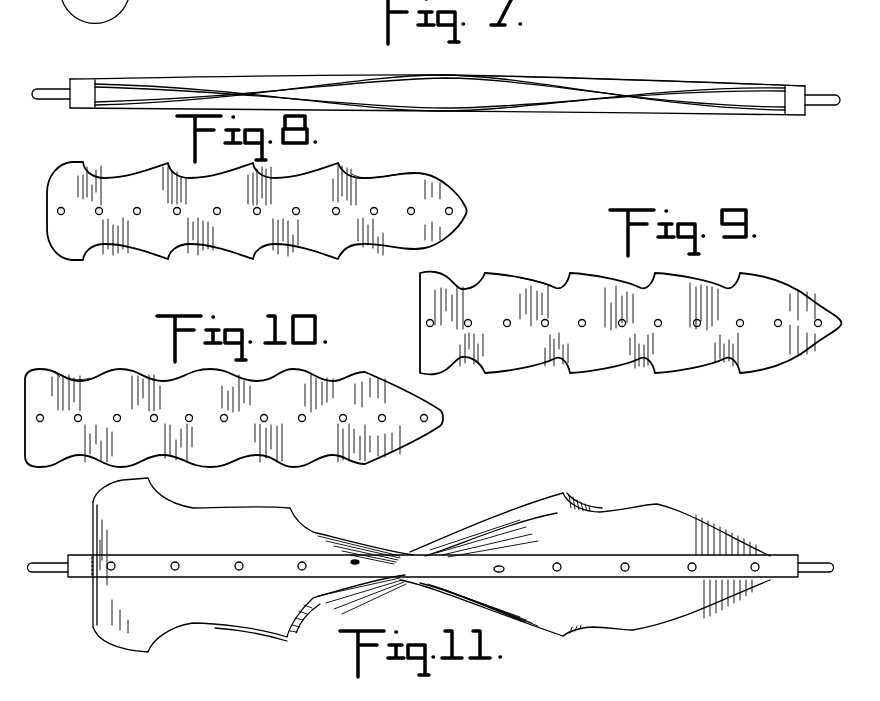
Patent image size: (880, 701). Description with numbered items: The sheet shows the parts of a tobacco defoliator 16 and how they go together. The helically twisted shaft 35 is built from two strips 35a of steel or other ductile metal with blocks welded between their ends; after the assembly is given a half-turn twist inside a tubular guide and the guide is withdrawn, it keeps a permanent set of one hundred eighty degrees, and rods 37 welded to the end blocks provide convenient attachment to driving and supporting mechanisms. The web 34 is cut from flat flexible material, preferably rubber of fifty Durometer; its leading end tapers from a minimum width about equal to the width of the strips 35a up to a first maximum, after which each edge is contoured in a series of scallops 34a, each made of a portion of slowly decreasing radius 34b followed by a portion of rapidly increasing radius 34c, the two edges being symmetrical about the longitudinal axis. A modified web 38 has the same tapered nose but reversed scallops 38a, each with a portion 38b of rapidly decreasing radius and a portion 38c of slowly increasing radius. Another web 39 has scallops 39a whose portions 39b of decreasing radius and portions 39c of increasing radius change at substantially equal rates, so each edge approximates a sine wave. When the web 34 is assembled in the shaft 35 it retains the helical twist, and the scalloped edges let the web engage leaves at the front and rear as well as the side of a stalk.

In FIG. 11, the defoliator 16 is at (671, 489).
In FIG. 8, the web 34 is at (436, 192).
In FIG. 11, the web 34 is at (701, 527).
In FIG. 8, the scallops 34a is at (393, 128).
In FIG. 8, the portion of slowly decreasing radius 34b is at (369, 177).
In FIG. 8, the portion of rapidly increasing radius 34c is at (340, 162).
In FIG. 7, the helically twisted shaft 35 is at (653, 55).
In FIG. 11, the helically twisted shaft 35 is at (739, 563).
In FIG. 7, the strips 35a is at (736, 85).
In FIG. 7, the rods 37 is at (48, 87).
In FIG. 11, the rods 37 is at (46, 561).
In FIG. 9, the web 38 is at (762, 360).
In FIG. 9, the scallops 38a is at (530, 228).
In FIG. 9, the portion of rapidly decreasing radius 38b is at (550, 287).
In FIG. 9, the portion of slowly increasing radius 38c is at (485, 272).
In FIG. 10, the web 39 is at (393, 443).
In FIG. 10, the scallops 39a is at (95, 312).
In FIG. 10, the portions of decreasing radius 39b is at (99, 372).
In FIG. 10, the portions of increasing radius 39c is at (49, 368).